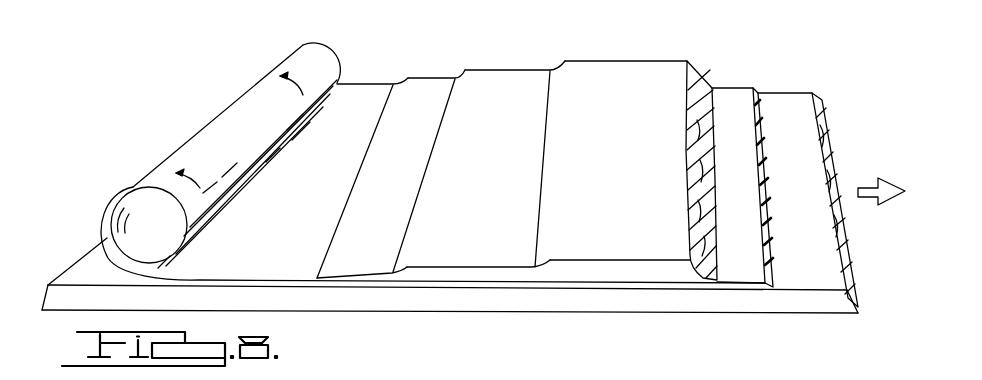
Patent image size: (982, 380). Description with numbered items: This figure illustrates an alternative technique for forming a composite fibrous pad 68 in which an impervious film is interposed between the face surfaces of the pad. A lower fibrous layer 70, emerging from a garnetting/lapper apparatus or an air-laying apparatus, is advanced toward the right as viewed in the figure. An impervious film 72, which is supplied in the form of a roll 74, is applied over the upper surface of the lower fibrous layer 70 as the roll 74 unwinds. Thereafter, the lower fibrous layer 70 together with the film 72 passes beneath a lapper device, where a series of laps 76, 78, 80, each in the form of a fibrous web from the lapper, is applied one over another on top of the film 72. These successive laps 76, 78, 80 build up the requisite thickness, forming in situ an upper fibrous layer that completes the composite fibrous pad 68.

The composite fibrous pad 68 is at (663, 103).
The lower fibrous layer 70 is at (72, 295).
The impervious film 72 is at (358, 97).
The roll 74 is at (323, 58).
The lap 76 is at (425, 78).
The lap 78 is at (517, 78).
The lap 80 is at (647, 70).